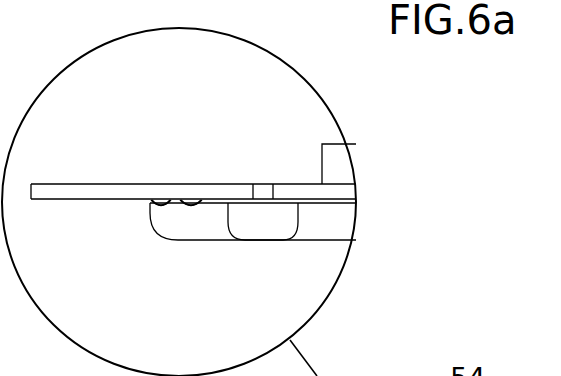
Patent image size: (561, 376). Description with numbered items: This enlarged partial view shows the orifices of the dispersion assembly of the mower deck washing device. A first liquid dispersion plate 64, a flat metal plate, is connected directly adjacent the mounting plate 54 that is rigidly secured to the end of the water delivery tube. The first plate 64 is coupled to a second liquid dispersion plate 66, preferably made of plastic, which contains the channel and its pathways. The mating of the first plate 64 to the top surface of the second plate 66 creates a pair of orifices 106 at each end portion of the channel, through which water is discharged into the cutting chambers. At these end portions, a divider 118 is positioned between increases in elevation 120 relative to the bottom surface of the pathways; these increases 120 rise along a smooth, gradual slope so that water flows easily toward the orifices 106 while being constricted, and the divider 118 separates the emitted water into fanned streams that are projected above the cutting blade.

The mounting plate 54 is at (340, 163).
The first liquid dispersion plate 64 is at (348, 192).
The second liquid dispersion plate 66 is at (347, 227).
The orifices 106 is at (189, 202).
The divider 118 is at (170, 204).
The increases in elevation 120 is at (182, 204).